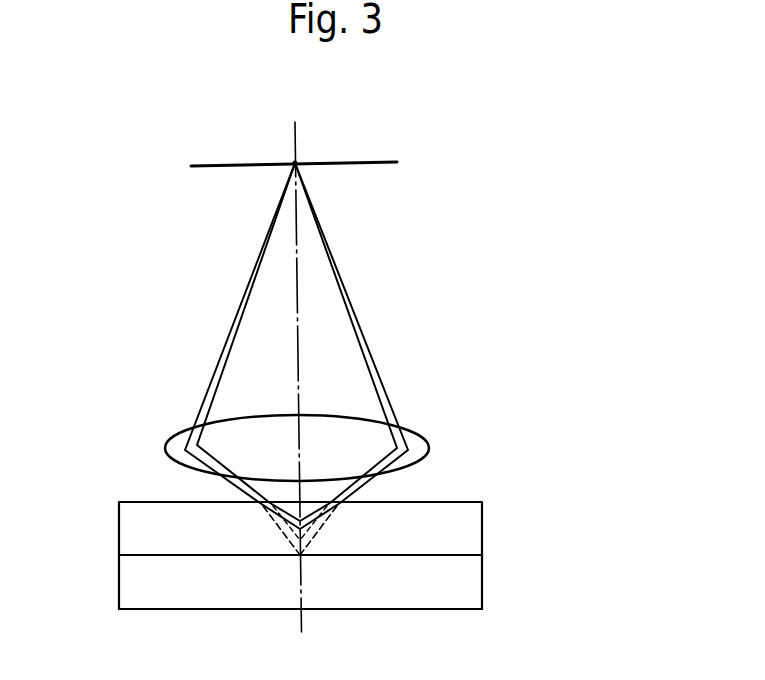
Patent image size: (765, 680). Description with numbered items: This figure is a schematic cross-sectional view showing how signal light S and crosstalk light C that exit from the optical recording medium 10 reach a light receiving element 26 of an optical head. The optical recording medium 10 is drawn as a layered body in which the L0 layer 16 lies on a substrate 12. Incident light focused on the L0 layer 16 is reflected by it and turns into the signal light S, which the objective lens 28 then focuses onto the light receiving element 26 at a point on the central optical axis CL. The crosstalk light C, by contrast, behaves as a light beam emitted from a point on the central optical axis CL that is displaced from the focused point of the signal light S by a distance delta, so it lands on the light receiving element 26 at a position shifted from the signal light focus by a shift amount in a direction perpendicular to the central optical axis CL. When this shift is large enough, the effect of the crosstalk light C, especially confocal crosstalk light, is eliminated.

The optical recording medium 10 is at (369, 534).
The substrate 12 is at (339, 597).
The L0 layer 16 is at (468, 556).
The light receiving element 26 is at (367, 166).
The objective lens 28 is at (420, 443).
The crosstalk light C is at (356, 297).
The signal light S is at (364, 336).
The central optical axis CL is at (295, 131).